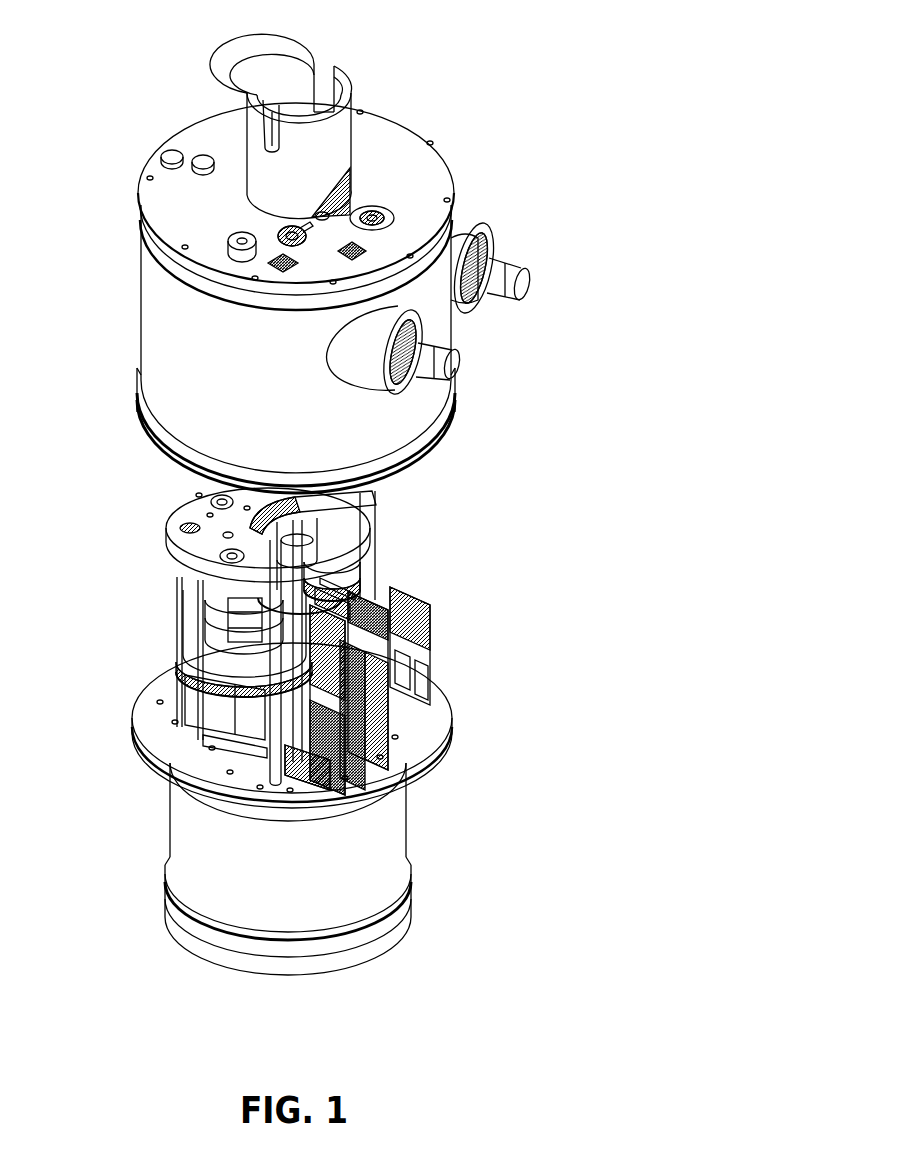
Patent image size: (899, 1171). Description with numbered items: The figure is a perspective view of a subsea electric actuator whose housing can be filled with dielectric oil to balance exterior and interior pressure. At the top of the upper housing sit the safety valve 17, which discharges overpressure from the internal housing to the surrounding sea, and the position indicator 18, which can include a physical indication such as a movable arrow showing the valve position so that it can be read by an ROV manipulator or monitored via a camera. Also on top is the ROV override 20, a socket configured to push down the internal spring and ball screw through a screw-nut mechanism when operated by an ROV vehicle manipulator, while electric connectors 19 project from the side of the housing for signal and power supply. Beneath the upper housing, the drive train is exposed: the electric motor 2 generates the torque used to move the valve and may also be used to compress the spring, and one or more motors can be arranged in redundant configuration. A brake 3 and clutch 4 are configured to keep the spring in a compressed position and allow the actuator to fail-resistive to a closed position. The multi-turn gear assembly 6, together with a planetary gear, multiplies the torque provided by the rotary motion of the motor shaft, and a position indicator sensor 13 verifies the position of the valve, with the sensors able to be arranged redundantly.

The safety valve 17 is at (201, 158).
The ROV override 20 is at (350, 80).
The position indicator 18 is at (280, 250).
The electric connector 19 is at (519, 268).
The multi-turn gear assembly 6 is at (183, 505).
The clutch 4 is at (183, 613).
The brake 3 is at (187, 627).
The electric motor 2 is at (203, 697).
The position indicator sensor 13 is at (270, 765).